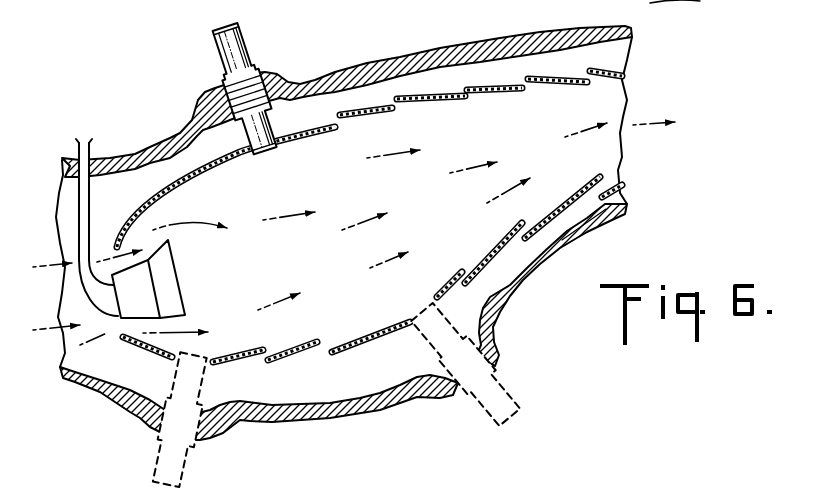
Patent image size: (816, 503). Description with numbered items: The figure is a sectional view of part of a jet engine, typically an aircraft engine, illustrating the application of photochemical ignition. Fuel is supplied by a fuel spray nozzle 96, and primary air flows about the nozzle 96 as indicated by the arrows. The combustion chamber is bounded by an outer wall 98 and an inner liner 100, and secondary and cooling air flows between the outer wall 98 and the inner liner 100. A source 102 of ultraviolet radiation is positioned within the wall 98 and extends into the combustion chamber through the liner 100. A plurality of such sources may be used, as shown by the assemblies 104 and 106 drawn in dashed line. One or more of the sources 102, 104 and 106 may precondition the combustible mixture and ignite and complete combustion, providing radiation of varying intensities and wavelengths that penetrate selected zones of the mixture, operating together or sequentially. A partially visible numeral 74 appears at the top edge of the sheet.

The fuel spray nozzle 96 is at (170, 287).
The outer wall 98 is at (460, 46).
The inner liner 100 is at (363, 110).
The source of ultraviolet radiation 102 is at (243, 38).
The assembly 104 is at (185, 468).
The assembly 106 is at (477, 397).
The housing 74 is at (758, 5).